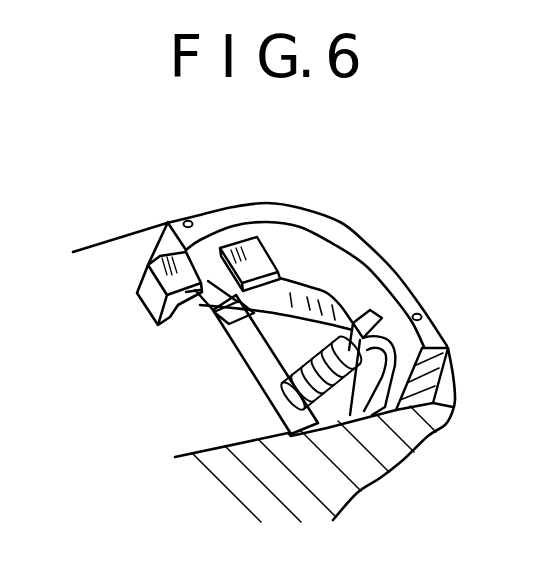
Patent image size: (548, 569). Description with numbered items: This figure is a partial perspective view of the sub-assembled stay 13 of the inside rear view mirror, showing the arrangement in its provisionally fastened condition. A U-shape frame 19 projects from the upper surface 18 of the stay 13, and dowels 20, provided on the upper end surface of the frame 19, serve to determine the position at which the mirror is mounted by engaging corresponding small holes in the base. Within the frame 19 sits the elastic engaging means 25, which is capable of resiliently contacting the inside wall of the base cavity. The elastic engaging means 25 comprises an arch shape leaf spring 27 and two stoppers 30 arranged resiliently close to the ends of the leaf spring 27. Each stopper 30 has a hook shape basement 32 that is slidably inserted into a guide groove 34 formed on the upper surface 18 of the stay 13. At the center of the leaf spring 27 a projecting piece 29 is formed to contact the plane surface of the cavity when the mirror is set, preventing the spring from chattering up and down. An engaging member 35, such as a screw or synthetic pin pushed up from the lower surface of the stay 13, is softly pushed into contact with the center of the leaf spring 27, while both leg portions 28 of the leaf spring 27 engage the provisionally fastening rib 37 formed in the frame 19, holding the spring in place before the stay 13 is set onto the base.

The stay 13 is at (422, 444).
The upper surface of the stay 18 is at (108, 257).
The U-shape frame 19 is at (428, 371).
The dowel 20 is at (187, 220).
The elastic engaging means 25 is at (307, 275).
The arch shape leaf spring 27 is at (342, 293).
The end (leg portion) of the leaf spring 28 is at (190, 303).
The projecting piece 29 is at (368, 312).
The stopper 30 is at (208, 318).
The hook shape basement 32 is at (249, 240).
The guide groove 34 is at (273, 378).
The engaging member 35 is at (353, 360).
The rib 37 is at (165, 267).